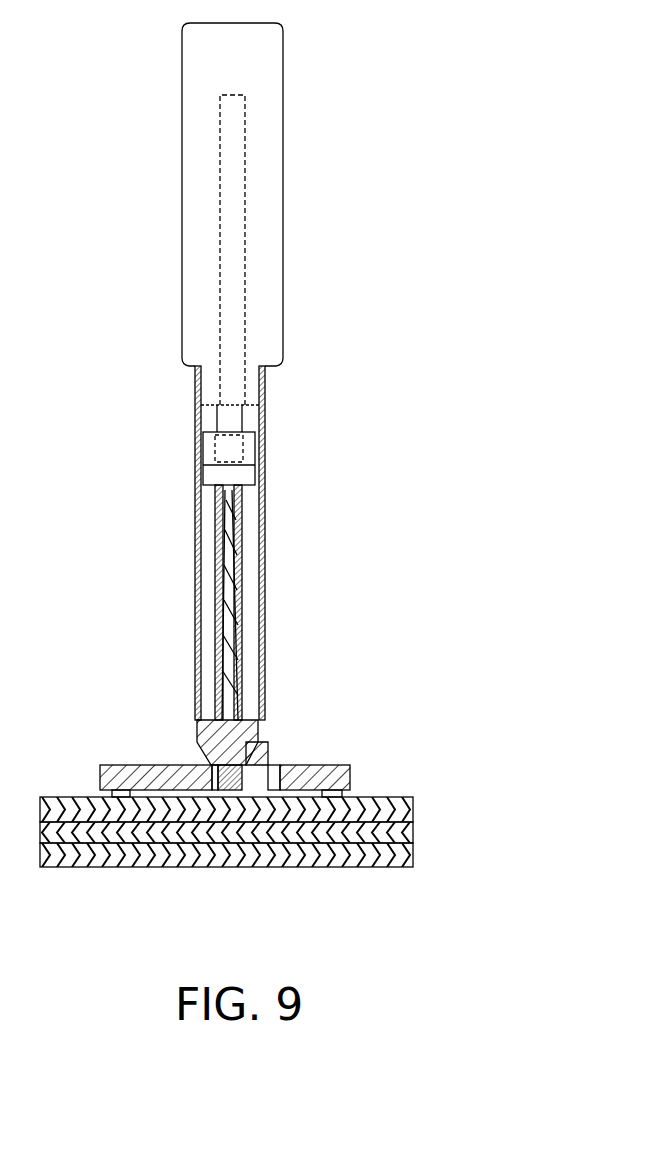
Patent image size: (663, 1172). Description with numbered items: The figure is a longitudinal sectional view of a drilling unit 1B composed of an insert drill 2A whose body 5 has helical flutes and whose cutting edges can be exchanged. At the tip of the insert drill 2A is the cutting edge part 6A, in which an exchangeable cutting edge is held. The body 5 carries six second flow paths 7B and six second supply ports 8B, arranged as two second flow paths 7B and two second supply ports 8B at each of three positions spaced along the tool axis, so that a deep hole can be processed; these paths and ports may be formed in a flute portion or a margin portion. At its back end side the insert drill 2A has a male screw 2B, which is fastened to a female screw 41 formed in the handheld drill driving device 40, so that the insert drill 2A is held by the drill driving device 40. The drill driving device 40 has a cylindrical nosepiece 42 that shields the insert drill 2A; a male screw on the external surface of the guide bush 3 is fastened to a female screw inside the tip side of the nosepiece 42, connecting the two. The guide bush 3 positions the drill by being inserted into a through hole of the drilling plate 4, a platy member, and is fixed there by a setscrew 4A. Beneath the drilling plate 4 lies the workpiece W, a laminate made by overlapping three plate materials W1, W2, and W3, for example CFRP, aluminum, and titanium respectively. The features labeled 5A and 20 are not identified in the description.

The drilling unit 1B is at (113, 348).
The handheld drill driving device 40 is at (283, 197).
The female screw 41 is at (256, 446).
The male screw 2B is at (262, 462).
The holder 5A is at (177, 602).
The insert drill 2A is at (105, 633).
The body 5 is at (215, 608).
The cutting edge part 6A is at (200, 742).
The pin electrodes 20 is at (342, 605).
The second flow path 7B is at (230, 605).
The second supply port 8B is at (230, 605).
The nosepiece 42 is at (262, 737).
The guide bush 3 is at (190, 765).
The setscrew 4A is at (280, 757).
The drilling plate 4 is at (269, 759).
The workpiece W is at (299, 847).
The plate material W1 is at (413, 812).
The plate material W2 is at (413, 835).
The plate material W3 is at (413, 857).